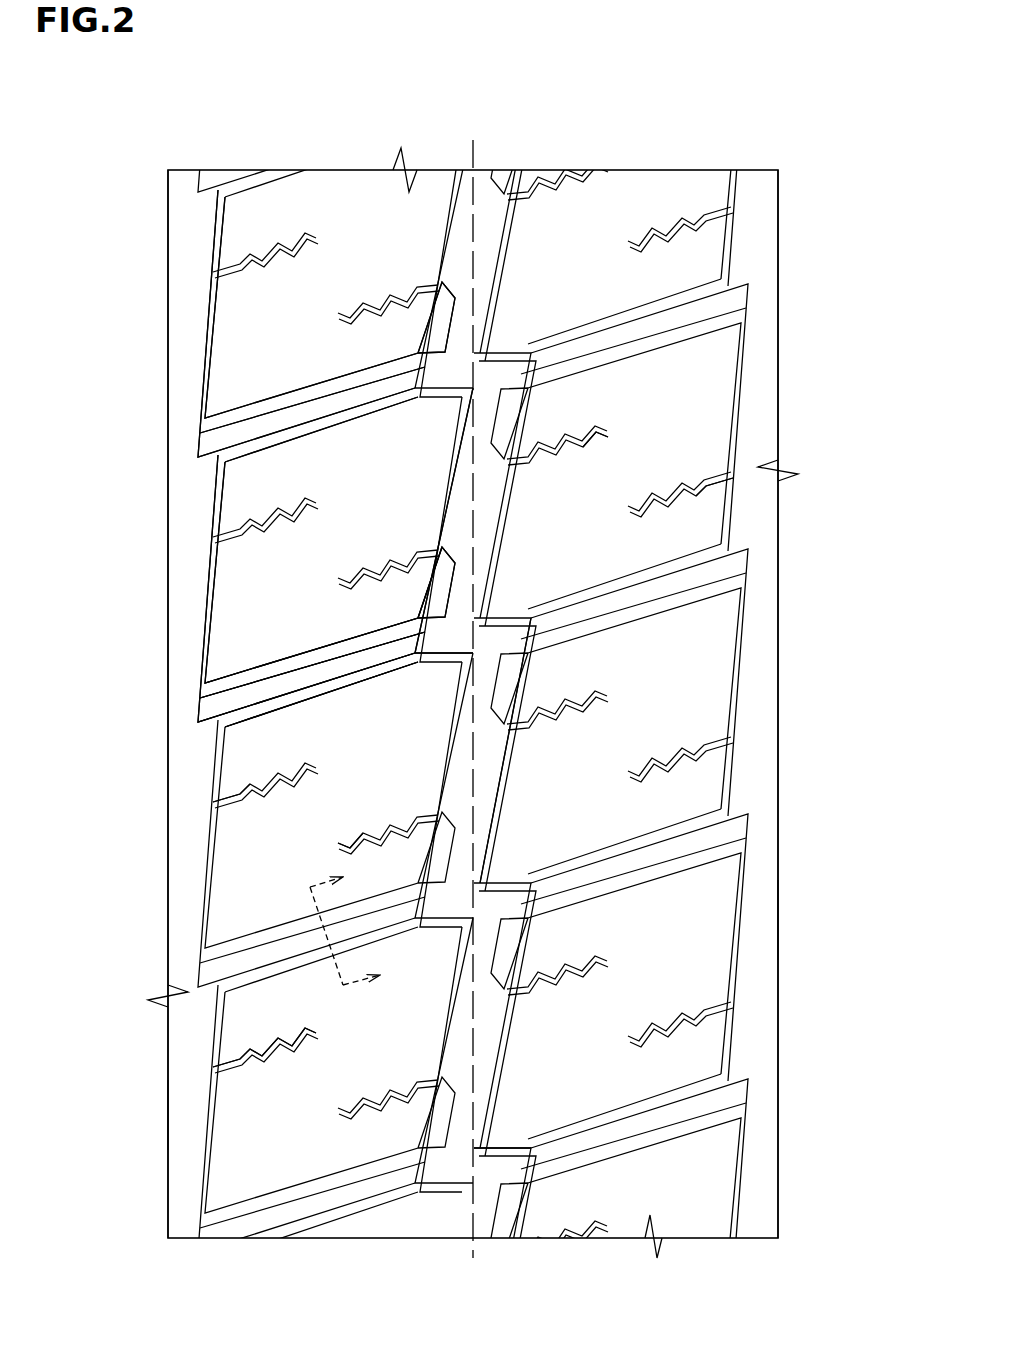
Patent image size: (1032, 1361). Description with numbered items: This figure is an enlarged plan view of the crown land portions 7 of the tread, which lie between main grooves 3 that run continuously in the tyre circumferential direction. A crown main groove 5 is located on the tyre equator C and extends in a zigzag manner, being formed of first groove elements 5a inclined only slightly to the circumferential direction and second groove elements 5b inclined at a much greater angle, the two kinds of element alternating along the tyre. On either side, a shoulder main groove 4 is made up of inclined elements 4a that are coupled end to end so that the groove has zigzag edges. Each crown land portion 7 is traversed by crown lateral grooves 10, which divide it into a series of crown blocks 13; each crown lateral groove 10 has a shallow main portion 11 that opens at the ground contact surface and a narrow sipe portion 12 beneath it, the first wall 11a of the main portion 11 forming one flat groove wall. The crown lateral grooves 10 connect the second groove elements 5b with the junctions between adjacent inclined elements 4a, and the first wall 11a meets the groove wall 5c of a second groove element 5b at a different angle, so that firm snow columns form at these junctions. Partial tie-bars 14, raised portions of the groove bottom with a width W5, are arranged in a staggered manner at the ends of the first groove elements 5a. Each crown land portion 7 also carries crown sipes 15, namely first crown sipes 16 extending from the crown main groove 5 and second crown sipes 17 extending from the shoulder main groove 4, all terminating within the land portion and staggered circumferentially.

The main groove 3 is at (762, 345).
The shoulder main groove 4 is at (192, 222).
The inclined element 4a is at (188, 1113).
The crown main groove 5 is at (488, 215).
The first groove element 5a is at (460, 512).
The second groove element 5b is at (462, 373).
The groove wall 5c is at (478, 868).
The crown land portion 7 is at (346, 222).
The crown lateral groove 10 is at (290, 418).
The main portion 11 is at (265, 690).
The first wall 11a is at (320, 688).
The sipe portion 12 is at (258, 702).
The crown block 13 is at (325, 285).
The partial tie-bar 14 is at (290, 1055).
The crown sipe 15 is at (78, 750).
The first crown sipe 16 is at (340, 835).
The second crown sipe 17 is at (245, 790).
The tyre equator C is at (471, 684).
The width of the partial tie-bar W5 is at (470, 1180).